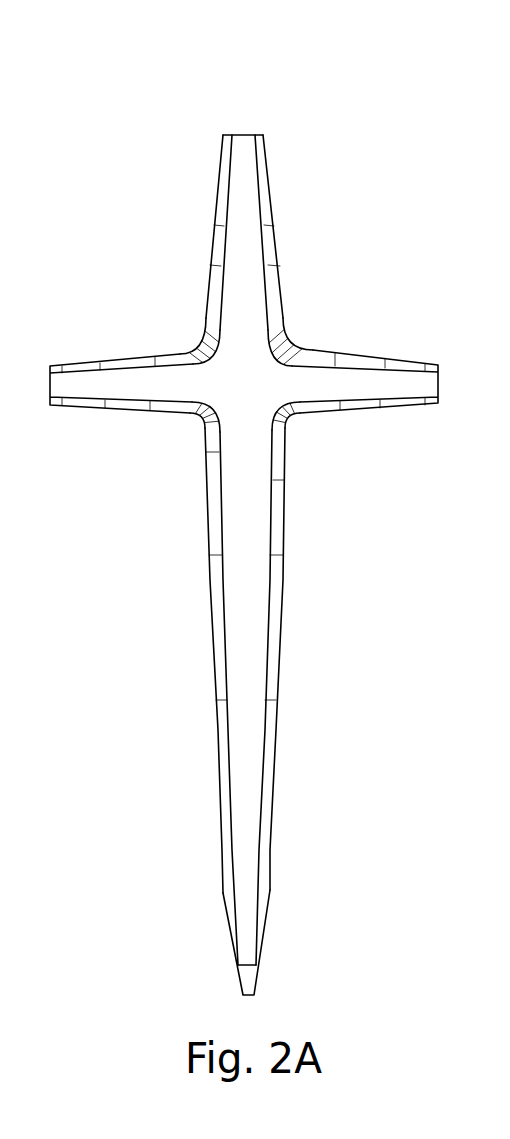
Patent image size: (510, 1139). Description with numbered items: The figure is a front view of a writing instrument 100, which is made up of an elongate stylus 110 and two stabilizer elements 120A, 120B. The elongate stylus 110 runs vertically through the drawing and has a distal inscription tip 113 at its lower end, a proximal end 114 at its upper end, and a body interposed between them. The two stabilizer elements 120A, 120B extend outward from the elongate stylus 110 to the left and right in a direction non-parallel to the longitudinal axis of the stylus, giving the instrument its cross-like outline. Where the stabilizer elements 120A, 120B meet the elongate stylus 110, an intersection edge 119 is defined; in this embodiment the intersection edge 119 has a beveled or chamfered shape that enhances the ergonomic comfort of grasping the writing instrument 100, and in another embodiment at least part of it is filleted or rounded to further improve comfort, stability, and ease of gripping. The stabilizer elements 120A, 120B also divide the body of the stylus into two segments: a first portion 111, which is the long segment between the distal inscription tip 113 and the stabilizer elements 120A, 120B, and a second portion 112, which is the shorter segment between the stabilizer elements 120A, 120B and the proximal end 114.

The writing instrument 100 is at (103, 76).
The elongate stylus 110 is at (307, 252).
The first portion 111 is at (247, 585).
The second portion 112 is at (230, 285).
The distal inscription tip 113 is at (247, 973).
The proximal end 114 is at (235, 134).
The intersection edge 119 is at (203, 422).
The stabilizer element 120A is at (87, 380).
The stabilizer element 120B is at (382, 385).